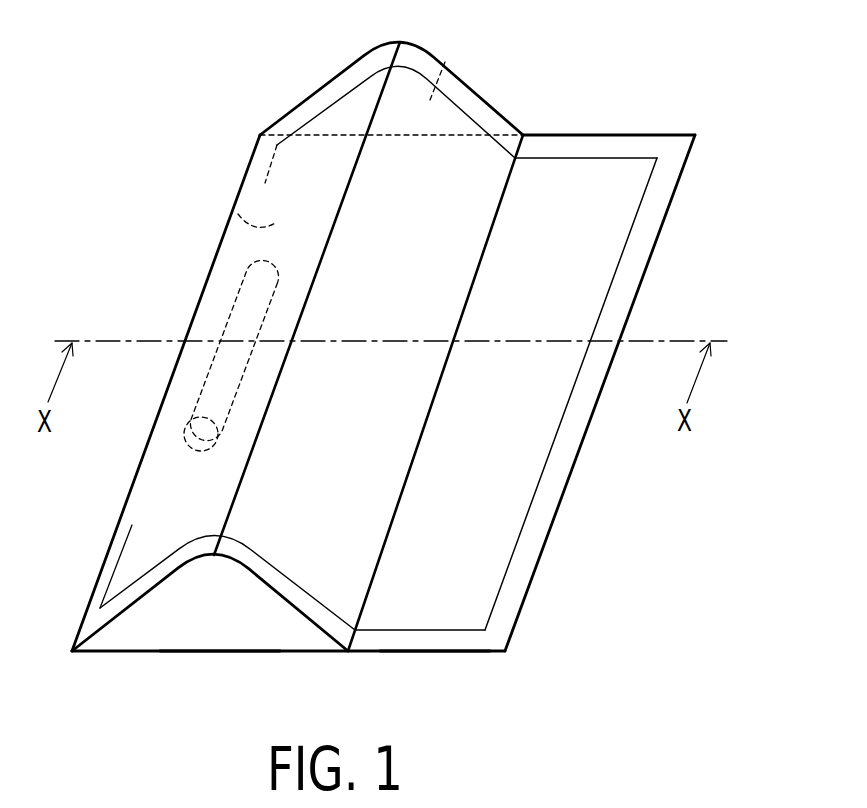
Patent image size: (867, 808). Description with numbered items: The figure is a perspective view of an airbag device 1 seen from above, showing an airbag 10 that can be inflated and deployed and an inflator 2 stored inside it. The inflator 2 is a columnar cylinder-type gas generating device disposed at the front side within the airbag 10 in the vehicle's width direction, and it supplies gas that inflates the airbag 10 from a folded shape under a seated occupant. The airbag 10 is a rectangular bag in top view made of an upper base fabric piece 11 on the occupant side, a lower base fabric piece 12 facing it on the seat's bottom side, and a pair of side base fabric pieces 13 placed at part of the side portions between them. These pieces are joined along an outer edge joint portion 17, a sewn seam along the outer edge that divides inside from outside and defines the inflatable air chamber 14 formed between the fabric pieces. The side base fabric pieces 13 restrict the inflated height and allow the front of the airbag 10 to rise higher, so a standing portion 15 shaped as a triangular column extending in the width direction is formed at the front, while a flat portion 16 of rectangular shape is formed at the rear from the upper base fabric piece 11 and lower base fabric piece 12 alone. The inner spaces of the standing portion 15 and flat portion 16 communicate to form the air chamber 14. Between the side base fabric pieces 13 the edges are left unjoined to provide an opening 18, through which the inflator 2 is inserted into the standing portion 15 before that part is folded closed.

The airbag device 1 is at (183, 154).
The inflator 2 is at (213, 387).
The airbag 10 is at (663, 238).
The upper base fabric piece 11 is at (167, 528).
The lower base fabric piece 12 is at (157, 653).
The side base fabric pieces 13 is at (443, 64).
The air chamber 14 is at (238, 214).
The standing portion 15 is at (217, 658).
The flat portion 16 is at (433, 658).
The outer edge joint portion 17 is at (541, 481).
The opening 18 is at (221, 288).